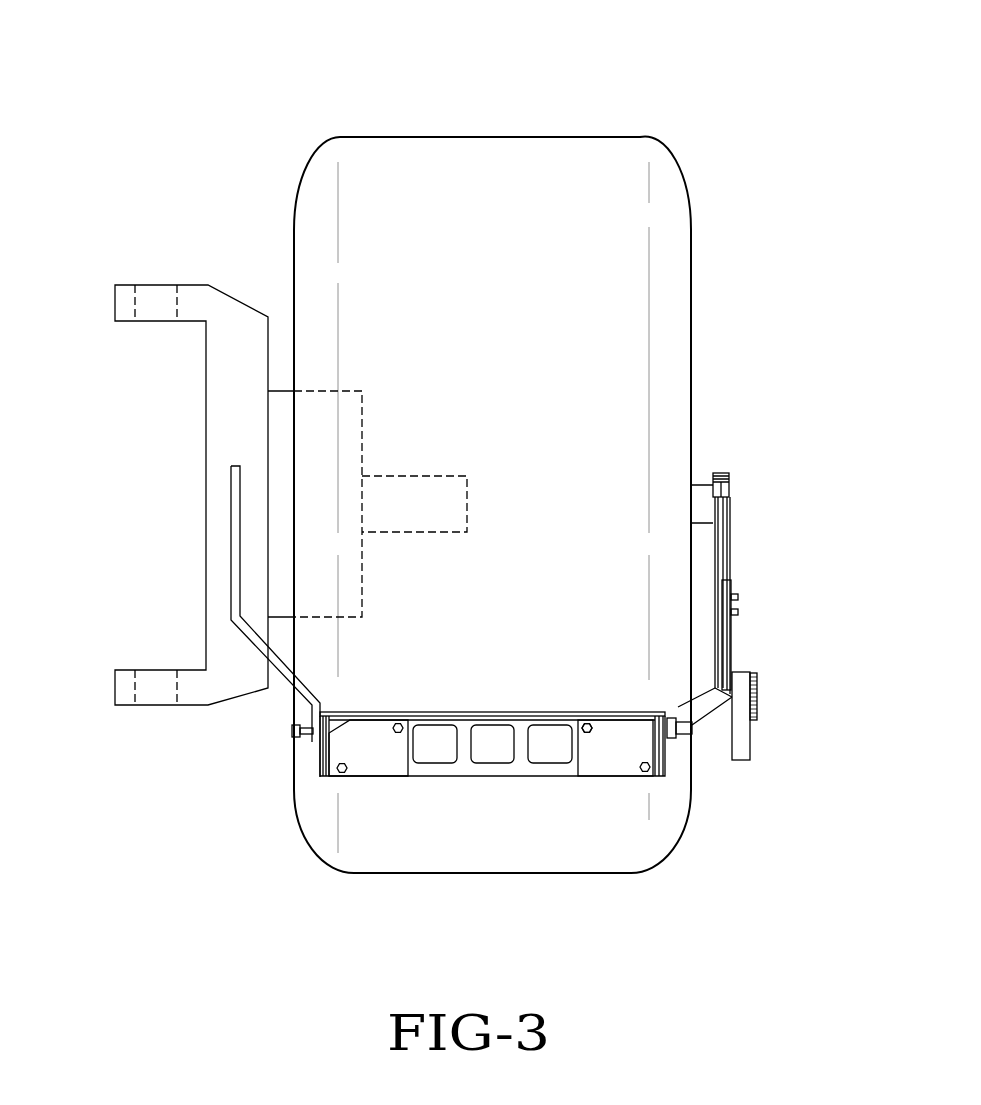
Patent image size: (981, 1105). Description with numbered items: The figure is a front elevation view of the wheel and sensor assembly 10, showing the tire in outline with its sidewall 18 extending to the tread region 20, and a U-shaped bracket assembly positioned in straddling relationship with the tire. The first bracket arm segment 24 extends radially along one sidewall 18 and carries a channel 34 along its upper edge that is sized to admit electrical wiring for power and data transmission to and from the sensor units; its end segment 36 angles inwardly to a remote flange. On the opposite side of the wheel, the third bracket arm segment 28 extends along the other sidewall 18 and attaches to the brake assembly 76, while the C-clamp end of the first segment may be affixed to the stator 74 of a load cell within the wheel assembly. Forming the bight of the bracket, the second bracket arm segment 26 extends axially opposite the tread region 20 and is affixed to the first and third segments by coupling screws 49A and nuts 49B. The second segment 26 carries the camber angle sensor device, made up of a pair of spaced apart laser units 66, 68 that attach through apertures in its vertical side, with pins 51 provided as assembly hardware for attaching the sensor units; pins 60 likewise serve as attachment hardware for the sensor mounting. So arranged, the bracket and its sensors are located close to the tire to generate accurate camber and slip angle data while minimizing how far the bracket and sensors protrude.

The wheel and sensor assembly 10 is at (96, 124).
The sidewall 18 is at (692, 358).
The tread region 20 is at (622, 288).
The first bracket arm segment 24 is at (727, 545).
The second bracket arm segment 26 is at (520, 768).
The third bracket arm segment 28 is at (243, 630).
The channel 34 is at (720, 582).
The end segment 36 is at (707, 723).
The coupling screws 49A is at (333, 728).
The nuts 49B is at (297, 730).
The pins 51 is at (596, 722).
The pins 60 is at (437, 745).
The laser unit 66 is at (615, 755).
The laser unit 68 is at (375, 732).
The stator 74 is at (698, 488).
The brake assembly 76 is at (224, 388).